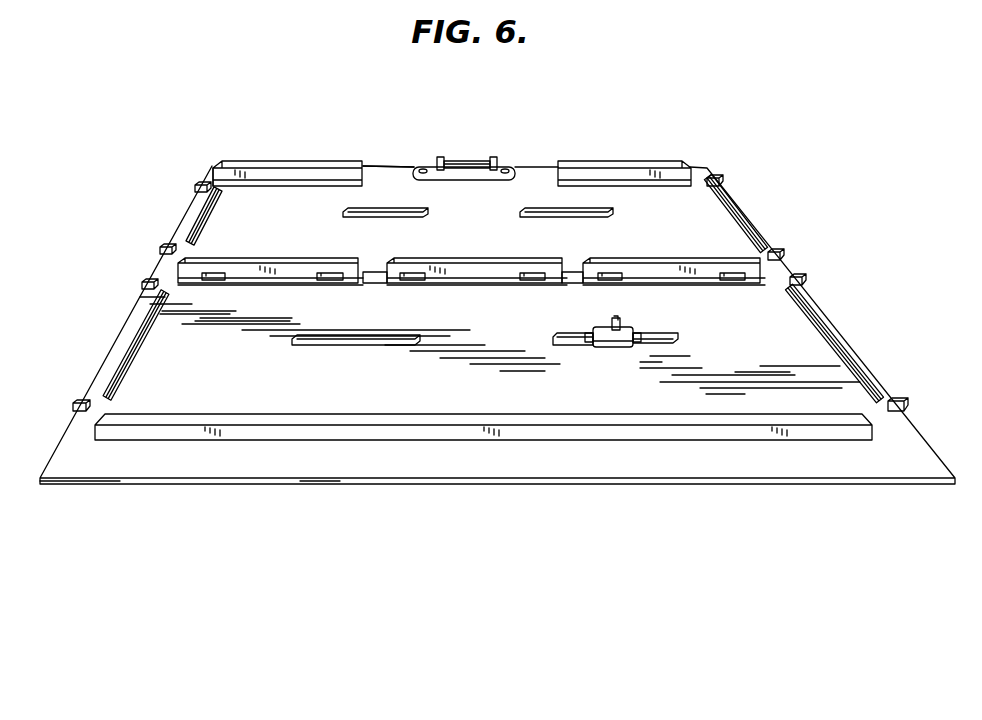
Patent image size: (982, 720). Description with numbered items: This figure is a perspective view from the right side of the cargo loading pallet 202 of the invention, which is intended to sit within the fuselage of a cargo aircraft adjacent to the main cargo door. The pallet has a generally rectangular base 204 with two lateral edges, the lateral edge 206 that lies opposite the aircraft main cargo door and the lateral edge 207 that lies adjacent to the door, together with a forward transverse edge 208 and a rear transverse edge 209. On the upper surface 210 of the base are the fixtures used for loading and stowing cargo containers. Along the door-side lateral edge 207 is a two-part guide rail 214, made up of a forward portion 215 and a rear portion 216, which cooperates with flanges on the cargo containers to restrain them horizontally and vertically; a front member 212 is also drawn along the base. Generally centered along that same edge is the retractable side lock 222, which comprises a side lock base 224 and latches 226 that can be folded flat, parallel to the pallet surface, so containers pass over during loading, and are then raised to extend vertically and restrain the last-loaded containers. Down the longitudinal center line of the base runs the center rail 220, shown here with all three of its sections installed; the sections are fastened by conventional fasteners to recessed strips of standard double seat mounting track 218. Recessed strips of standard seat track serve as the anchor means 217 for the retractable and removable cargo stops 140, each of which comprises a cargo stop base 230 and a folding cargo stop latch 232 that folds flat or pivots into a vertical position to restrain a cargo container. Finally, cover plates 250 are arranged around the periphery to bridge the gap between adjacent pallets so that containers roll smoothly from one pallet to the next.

The cargo stop 140 is at (603, 333).
The cargo loading pallet 202 is at (117, 313).
The base 204 is at (98, 485).
The lateral edge opposite the aircraft main cargo door 206 is at (318, 485).
The lateral edge adjacent the aircraft main cargo door 207 is at (395, 165).
The forward transverse edge 208 is at (825, 305).
The rear transverse edge 209 is at (187, 222).
The upper surface 210 is at (196, 376).
The front bar 212 is at (93, 427).
The two-part guide rail 214 is at (205, 166).
The forward portion 215 is at (683, 160).
The rear portion 216 is at (238, 160).
The anchor means 217 is at (345, 213).
The double seat mounting track 218 is at (373, 262).
The center rail 220 is at (233, 260).
The retractable side lock 222 is at (486, 151).
The side lock base 224 is at (477, 182).
The latches 226 is at (489, 157).
The cargo stop base 230 is at (600, 327).
The folding cargo stop latch 232 is at (620, 321).
The cover plates 250 is at (196, 188).